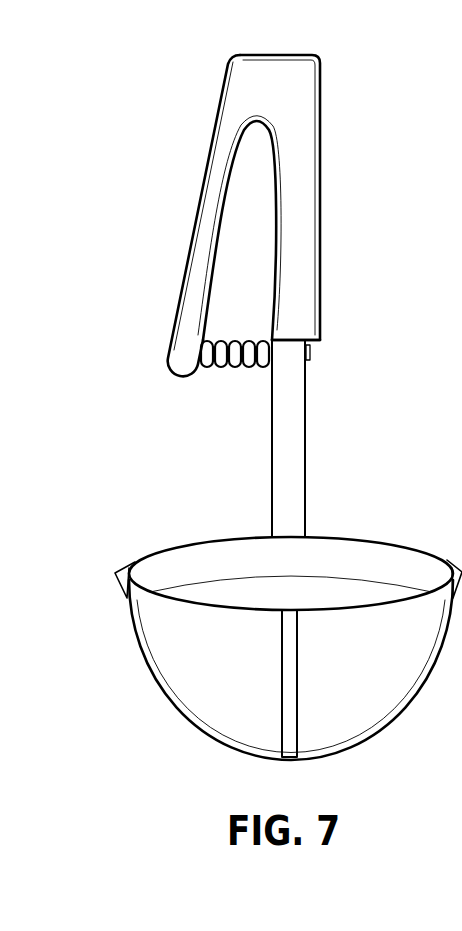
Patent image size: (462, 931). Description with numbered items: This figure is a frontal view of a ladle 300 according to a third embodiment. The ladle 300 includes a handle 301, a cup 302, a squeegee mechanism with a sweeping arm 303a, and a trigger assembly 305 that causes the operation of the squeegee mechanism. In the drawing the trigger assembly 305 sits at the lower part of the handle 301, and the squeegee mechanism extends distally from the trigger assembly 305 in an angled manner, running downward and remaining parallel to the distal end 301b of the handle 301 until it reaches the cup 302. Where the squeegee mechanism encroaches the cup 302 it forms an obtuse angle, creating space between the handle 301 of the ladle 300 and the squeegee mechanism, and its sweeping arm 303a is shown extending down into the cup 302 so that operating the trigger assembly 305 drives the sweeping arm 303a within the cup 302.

The ladle 300 is at (126, 133).
The handle 301 is at (322, 140).
The distal end of the handle 301b is at (321, 308).
The cup 302 is at (200, 702).
The sweeping arm 303a is at (288, 683).
The trigger assembly 305 is at (198, 393).